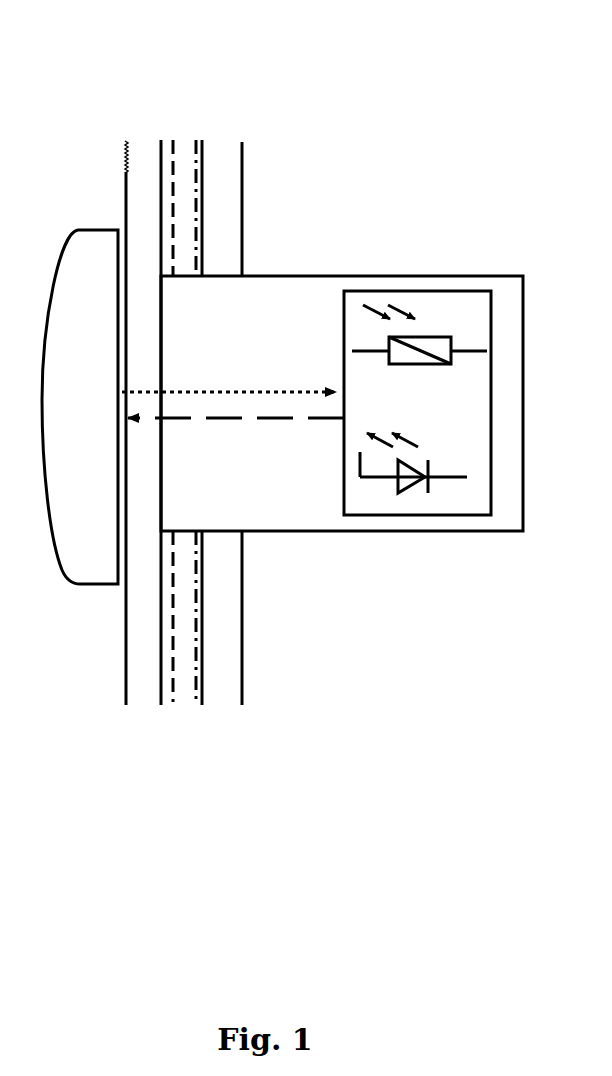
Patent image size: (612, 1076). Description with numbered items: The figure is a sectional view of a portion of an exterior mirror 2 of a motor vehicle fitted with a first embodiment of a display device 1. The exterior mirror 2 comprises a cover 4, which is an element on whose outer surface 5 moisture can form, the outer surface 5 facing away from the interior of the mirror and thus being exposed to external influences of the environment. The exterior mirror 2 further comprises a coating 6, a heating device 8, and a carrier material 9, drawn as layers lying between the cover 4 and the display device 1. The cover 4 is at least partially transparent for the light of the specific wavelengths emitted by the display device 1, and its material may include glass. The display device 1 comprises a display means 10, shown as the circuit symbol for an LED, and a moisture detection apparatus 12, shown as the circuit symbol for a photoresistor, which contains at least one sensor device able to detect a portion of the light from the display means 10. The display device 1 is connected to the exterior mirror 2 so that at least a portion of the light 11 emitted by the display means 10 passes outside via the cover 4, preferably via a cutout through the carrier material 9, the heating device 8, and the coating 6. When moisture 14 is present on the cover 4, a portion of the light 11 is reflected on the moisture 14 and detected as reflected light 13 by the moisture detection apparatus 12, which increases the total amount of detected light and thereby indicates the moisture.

The display device 1 is at (398, 543).
The exterior mirror 2 is at (253, 760).
The cover 4 is at (145, 687).
The outer surface 5 is at (122, 698).
The coating 6 is at (171, 137).
The heating device 8 is at (194, 702).
The carrier material 9 is at (218, 143).
The display means 10 is at (450, 485).
The emitted light 11 is at (287, 430).
The moisture detection apparatus 12 is at (433, 332).
The reflected light 13 is at (283, 370).
The moisture 14 is at (82, 228).